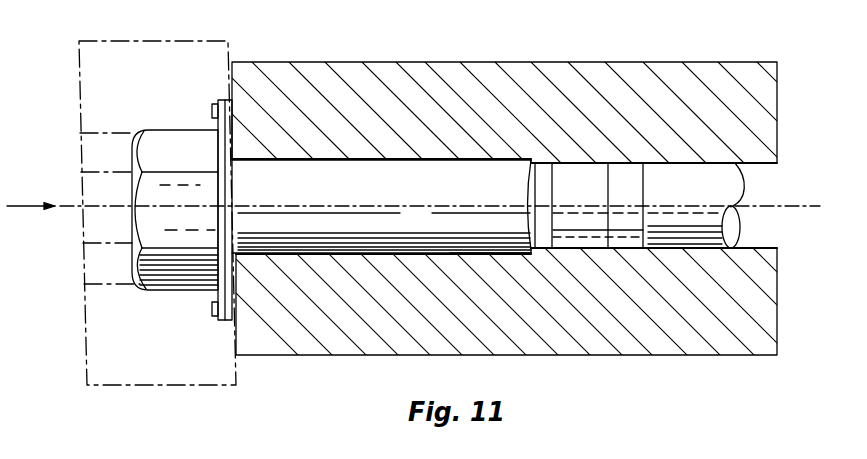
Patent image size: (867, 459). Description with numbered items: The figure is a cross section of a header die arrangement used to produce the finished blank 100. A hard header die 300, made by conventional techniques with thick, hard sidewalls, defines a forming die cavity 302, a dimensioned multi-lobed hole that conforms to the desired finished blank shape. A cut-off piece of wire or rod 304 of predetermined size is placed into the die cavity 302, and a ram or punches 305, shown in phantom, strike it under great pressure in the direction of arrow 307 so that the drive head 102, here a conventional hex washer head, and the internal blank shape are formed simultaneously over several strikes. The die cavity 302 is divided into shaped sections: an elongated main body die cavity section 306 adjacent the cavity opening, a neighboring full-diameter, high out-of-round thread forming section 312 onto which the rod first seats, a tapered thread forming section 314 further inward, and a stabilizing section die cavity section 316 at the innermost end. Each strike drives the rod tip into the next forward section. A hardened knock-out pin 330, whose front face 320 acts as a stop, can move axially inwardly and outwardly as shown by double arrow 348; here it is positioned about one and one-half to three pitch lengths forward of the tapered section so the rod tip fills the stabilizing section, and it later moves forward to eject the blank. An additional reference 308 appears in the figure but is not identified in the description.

The finished blank 100 is at (310, 204).
The drive head 102 is at (197, 205).
The header die 300 is at (698, 100).
The forming die cavity 302 is at (468, 257).
The cut-off piece of wire or rod 304 is at (409, 159).
The punches 305 is at (190, 48).
The main body die cavity section 306 is at (407, 287).
The arrow 307 is at (27, 206).
The upper clearance gap 308 is at (393, 178).
The full-diameter thread forming section 312 is at (550, 262).
The tapered thread forming section 314 is at (588, 262).
The stabilizing section die cavity section 316 is at (631, 261).
The front face 320 is at (753, 188).
The knock-out pin 330 is at (693, 253).
The double arrow 348 is at (647, 192).